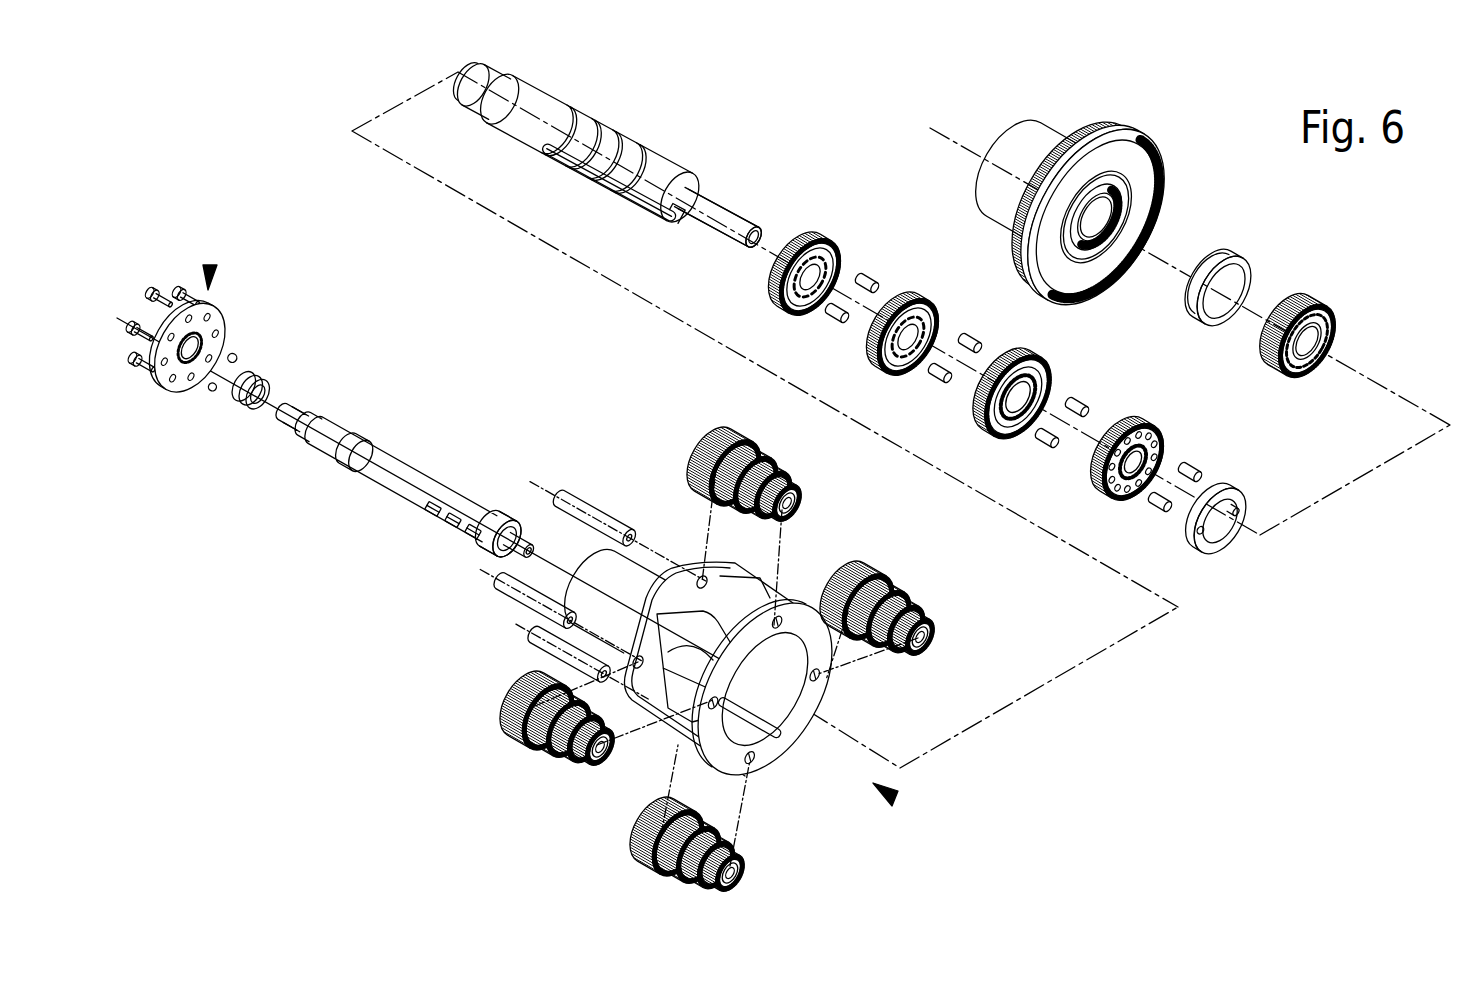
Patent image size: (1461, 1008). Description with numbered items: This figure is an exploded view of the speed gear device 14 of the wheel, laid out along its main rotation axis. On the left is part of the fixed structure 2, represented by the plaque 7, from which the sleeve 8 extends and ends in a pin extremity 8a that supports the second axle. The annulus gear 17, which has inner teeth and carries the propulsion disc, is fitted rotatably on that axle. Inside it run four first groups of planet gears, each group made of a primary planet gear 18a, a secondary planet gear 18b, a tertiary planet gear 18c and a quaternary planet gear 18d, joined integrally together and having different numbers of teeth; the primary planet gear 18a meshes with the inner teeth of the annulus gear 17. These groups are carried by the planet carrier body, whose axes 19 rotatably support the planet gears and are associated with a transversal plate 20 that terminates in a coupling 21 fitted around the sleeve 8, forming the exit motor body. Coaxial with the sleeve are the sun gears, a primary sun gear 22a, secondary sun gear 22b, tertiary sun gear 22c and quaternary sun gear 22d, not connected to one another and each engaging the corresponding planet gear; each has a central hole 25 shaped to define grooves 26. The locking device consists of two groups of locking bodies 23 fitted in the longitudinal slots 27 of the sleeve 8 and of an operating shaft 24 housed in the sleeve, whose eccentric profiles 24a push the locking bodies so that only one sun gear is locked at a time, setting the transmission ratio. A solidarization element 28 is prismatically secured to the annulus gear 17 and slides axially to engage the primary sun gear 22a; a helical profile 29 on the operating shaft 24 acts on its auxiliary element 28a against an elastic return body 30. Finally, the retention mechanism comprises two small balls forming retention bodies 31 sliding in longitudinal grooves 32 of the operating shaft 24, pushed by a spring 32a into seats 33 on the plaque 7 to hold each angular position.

The fixed structure 2 is at (210, 265).
The plaque 7 is at (222, 330).
The sleeve 8 is at (543, 103).
The pin extremity 8a is at (745, 212).
The speed gear device 14 is at (895, 798).
The annulus gear 17 is at (1113, 130).
The primary planet gear 18a is at (743, 858).
The secondary planet gear 18b is at (713, 833).
The tertiary planet gear 18c is at (673, 883).
The quaternary planet gear 18d is at (690, 797).
The axes 19 is at (533, 640).
The transversal plate 20 is at (694, 568).
The coupling 21 is at (602, 523).
The primary sun gear 22a is at (1165, 440).
The secondary sun gear 22b is at (1048, 370).
The tertiary sun gear 22c is at (880, 365).
The quaternary sun gear 22d is at (767, 295).
The locking bodies 23 is at (1160, 505).
The operating shaft 24 is at (330, 430).
The eccentric profiles 24a is at (470, 507).
The central hole 25 is at (912, 293).
The grooves 26 is at (935, 330).
The longitudinal slots 27 is at (571, 170).
The solidarization element 28 is at (1340, 318).
The auxiliary element 28a is at (1223, 545).
The helical profile 29 is at (492, 550).
The elastic return body 30 is at (1250, 268).
The retention bodies 31 is at (212, 393).
The longitudinal grooves 32 is at (316, 452).
The spring 32a is at (258, 375).
The seats 33 is at (198, 362).